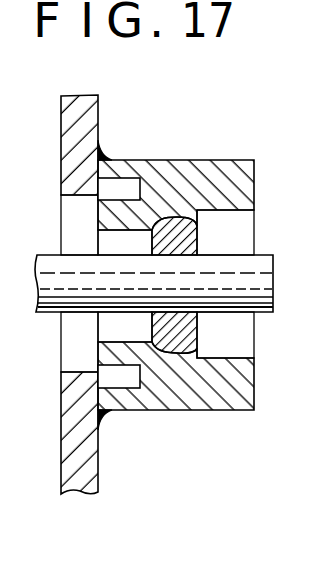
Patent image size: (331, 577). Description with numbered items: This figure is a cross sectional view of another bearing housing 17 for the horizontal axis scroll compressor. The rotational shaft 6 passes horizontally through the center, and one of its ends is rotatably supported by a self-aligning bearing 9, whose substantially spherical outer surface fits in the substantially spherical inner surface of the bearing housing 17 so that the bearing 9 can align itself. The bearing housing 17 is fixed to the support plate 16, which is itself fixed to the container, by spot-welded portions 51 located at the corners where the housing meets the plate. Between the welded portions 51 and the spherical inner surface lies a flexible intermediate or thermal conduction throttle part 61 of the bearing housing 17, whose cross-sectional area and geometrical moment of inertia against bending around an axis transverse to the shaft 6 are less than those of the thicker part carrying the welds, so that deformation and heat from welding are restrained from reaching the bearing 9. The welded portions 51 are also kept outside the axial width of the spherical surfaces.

The support plate 16 is at (88, 111).
The bearing housing 17 is at (227, 167).
The self-aligning bearing 9 is at (173, 337).
The spot-welded portions 51 is at (108, 151).
The intermediate part 61 is at (120, 397).
The rotational shaft 6 is at (50, 308).